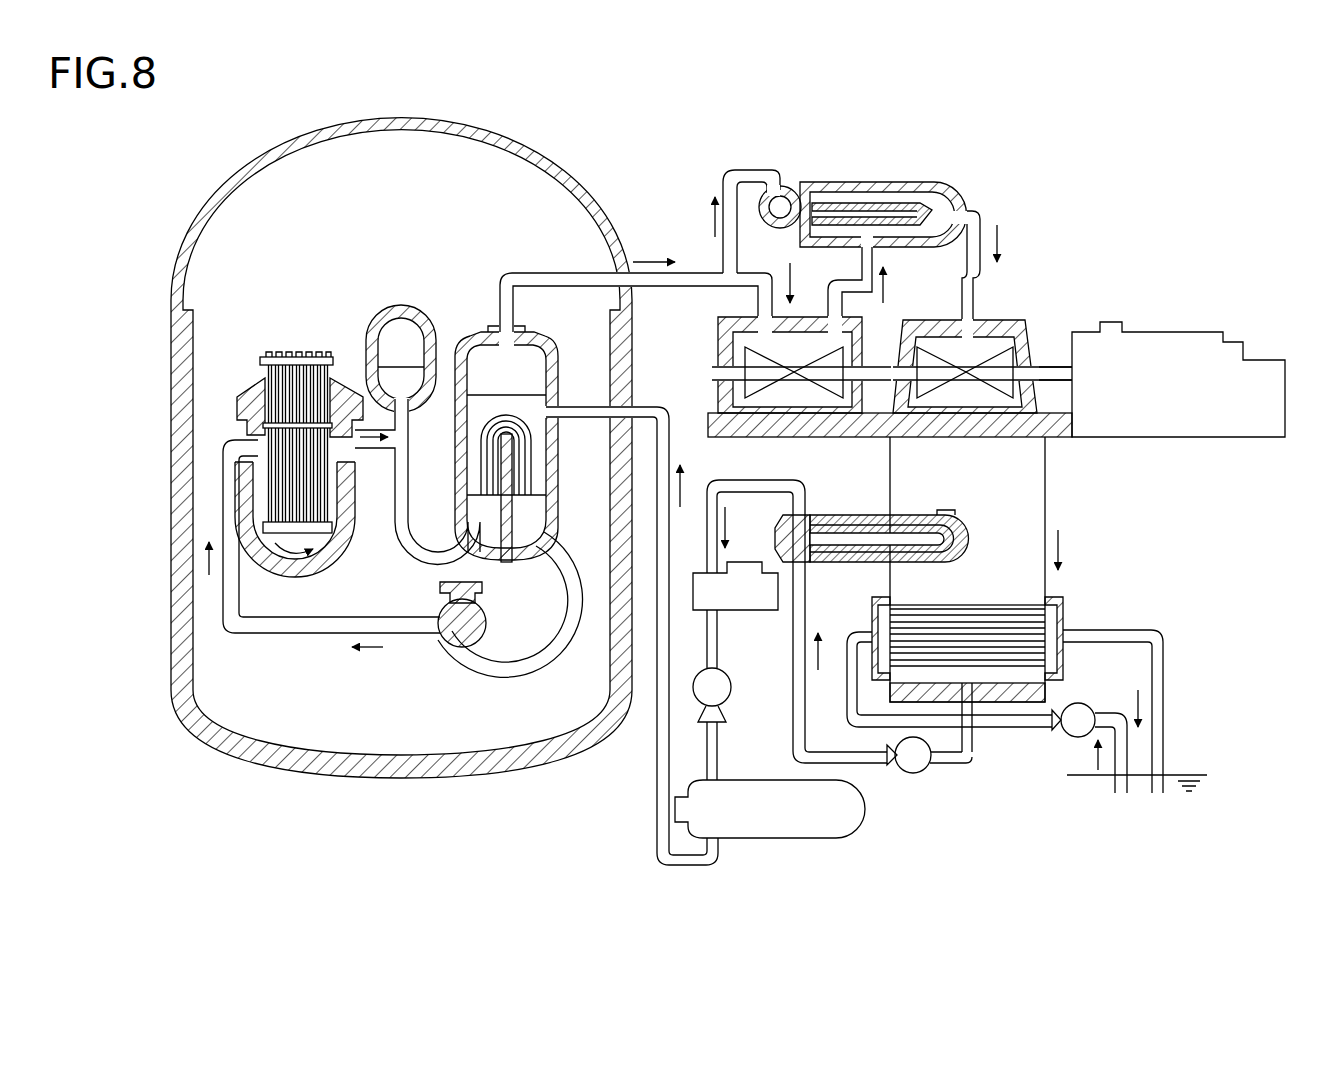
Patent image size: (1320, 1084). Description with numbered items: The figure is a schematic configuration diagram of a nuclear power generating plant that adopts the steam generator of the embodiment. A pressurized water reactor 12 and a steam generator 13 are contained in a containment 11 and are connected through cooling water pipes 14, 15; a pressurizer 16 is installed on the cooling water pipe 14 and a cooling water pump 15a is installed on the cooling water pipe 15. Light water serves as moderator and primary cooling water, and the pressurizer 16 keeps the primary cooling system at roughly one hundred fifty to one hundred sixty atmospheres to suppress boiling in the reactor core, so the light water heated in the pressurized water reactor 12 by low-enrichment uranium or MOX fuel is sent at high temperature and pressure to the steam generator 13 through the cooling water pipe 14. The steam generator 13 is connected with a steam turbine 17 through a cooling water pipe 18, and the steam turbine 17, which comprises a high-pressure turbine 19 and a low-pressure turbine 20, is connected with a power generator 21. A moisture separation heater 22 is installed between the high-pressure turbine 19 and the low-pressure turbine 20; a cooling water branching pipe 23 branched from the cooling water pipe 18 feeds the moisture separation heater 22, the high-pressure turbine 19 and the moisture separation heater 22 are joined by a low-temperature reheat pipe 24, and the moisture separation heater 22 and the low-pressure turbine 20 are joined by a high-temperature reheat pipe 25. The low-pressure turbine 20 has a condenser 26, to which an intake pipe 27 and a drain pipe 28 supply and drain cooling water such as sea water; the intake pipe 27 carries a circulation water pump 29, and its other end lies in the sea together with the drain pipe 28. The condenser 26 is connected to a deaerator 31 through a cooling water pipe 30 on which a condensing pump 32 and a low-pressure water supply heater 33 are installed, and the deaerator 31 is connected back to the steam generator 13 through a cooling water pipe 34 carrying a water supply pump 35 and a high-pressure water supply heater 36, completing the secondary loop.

The containment 11 is at (397, 116).
The pressurized water reactor 12 is at (251, 386).
The steam generator 13 is at (472, 328).
The cooling water pipe 14 is at (412, 492).
The cooling water pipe 15 is at (300, 640).
The cooling water pump 15a is at (488, 620).
The pressurizer 16 is at (386, 310).
The steam turbine 17 is at (937, 304).
The cooling water pipe 18 is at (662, 294).
The high-pressure turbine 19 is at (740, 312).
The low-pressure turbine 20 is at (1013, 315).
The power generator 21 is at (1241, 334).
The moisture separation heater 22 is at (815, 175).
The cooling water branching pipe 23 is at (733, 168).
The low-temperature reheat pipe 24 is at (880, 270).
The high-temperature reheat pipe 25 is at (988, 215).
The condenser 26 is at (1059, 509).
The intake pipe 27 is at (855, 634).
The drain pipe 28 is at (1166, 665).
The circulation water pump 29 is at (1078, 700).
The cooling water pipe 30 is at (978, 742).
The deaerator 31 is at (705, 572).
The condensing pump 32 is at (927, 773).
The low-pressure water supply heater 33 is at (842, 514).
The cooling water pipe 34 is at (664, 868).
The water supply pump 35 is at (728, 680).
The high-pressure water supply heater 36 is at (758, 778).